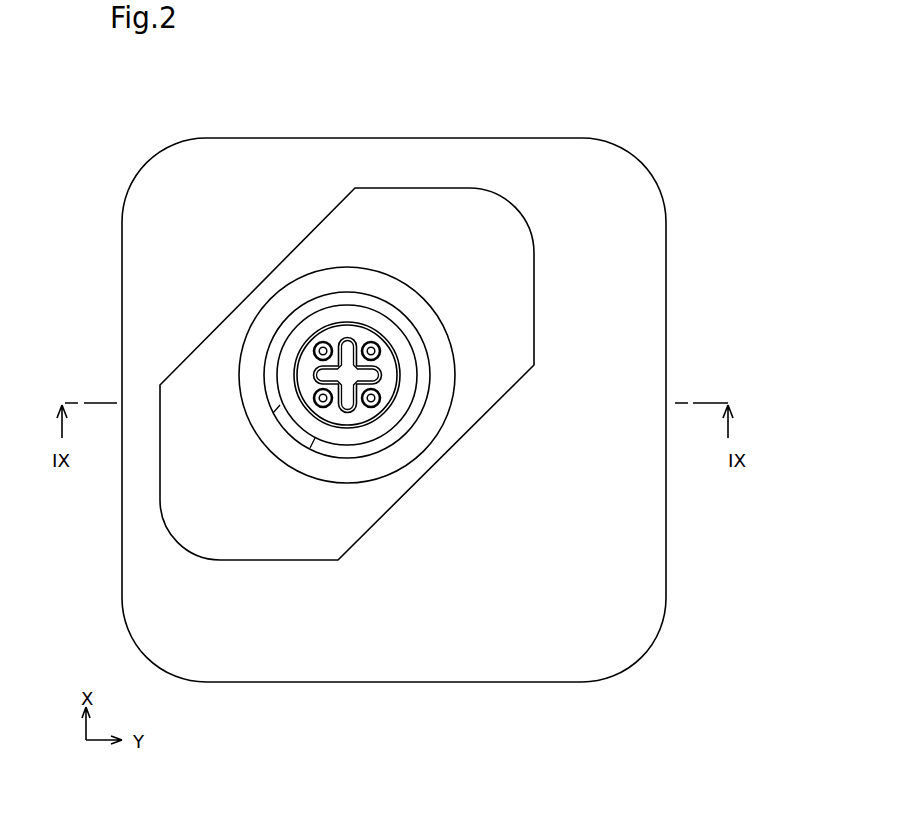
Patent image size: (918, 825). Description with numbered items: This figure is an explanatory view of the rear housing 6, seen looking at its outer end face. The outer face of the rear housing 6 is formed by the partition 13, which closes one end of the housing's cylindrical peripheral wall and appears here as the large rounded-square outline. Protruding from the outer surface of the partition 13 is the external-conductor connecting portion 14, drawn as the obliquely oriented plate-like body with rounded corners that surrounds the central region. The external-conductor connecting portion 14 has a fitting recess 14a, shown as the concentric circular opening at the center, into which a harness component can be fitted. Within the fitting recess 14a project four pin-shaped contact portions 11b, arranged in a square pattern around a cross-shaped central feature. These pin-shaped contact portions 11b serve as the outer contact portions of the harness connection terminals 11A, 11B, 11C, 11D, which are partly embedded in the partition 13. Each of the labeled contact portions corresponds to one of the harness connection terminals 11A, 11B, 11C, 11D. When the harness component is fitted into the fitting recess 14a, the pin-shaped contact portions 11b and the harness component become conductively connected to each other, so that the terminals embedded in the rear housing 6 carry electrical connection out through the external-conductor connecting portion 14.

The rear housing 6 is at (394, 373).
The partition 13 is at (577, 138).
The external-conductor connecting portion 14 is at (393, 188).
The fitting recess 14a is at (395, 313).
The pin-shaped contact portion 11b is at (397, 383).
The harness connection terminal 11A is at (317, 345).
The harness connection terminal 11B is at (317, 403).
The harness connection terminal 11C is at (380, 348).
The harness connection terminal 11D is at (377, 405).